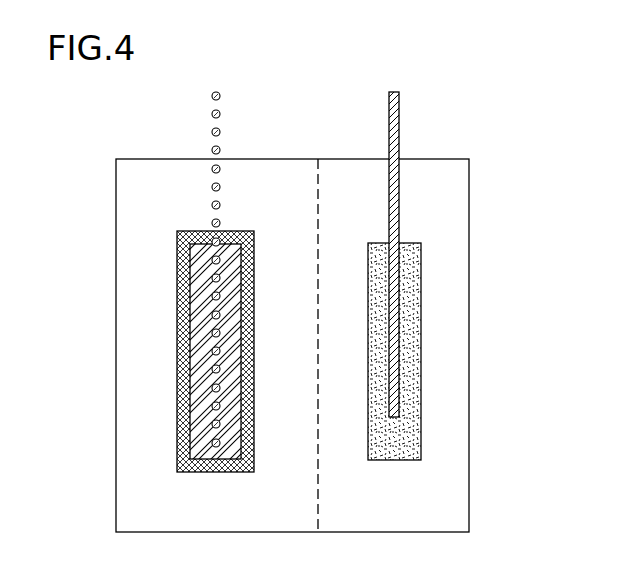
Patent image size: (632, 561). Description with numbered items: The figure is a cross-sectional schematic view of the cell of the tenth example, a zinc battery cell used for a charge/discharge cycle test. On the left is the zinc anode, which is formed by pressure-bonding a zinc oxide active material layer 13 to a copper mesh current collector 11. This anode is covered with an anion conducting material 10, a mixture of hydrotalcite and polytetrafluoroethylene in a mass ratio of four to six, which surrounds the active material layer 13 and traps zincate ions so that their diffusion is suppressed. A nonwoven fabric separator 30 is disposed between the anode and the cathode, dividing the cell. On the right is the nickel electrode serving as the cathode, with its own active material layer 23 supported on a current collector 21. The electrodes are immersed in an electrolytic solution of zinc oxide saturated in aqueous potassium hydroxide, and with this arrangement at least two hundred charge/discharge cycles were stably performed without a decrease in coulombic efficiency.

The anion conducting material 10 is at (223, 272).
The current collector 11 is at (213, 114).
The active material layer 13 is at (177, 365).
The current collector 21 is at (400, 103).
The active material layer 23 is at (412, 331).
The separator 30 is at (317, 203).